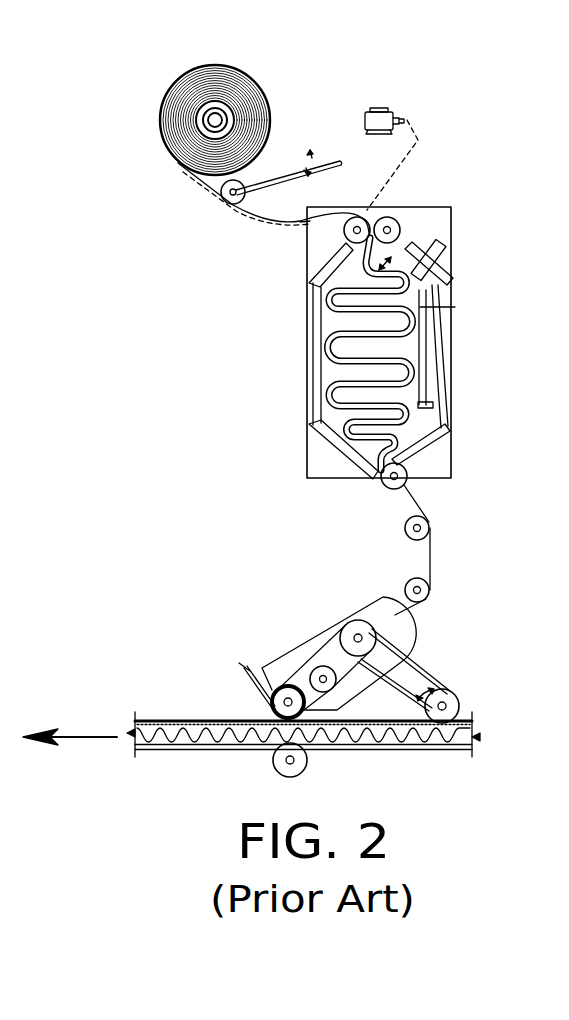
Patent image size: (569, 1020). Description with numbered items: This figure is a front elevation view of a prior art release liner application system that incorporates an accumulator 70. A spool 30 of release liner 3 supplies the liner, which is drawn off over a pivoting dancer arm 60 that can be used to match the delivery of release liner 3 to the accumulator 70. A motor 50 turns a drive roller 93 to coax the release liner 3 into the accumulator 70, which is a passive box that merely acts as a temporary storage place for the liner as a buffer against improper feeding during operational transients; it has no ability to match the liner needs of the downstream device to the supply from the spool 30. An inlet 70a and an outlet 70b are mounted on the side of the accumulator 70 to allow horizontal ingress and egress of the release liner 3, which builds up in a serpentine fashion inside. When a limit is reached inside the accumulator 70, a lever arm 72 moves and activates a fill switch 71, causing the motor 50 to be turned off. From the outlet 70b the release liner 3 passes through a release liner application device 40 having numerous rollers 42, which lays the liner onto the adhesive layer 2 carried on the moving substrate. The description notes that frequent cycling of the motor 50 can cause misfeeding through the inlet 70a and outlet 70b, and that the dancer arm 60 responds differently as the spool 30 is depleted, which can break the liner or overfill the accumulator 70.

The adhesive layer 2 is at (470, 720).
The release liner 3 is at (186, 718).
The spool 30 is at (160, 113).
The release liner application device 40 is at (388, 598).
The rollers 42 is at (224, 201).
The motor 50 is at (377, 107).
The dancer arm 60 is at (278, 177).
The accumulator 70 is at (452, 192).
The inlet 70a is at (302, 230).
The outlet 70b is at (377, 487).
The fill switch 71 is at (443, 250).
The lever arm 72 is at (455, 307).
The drive roller 93 is at (322, 231).